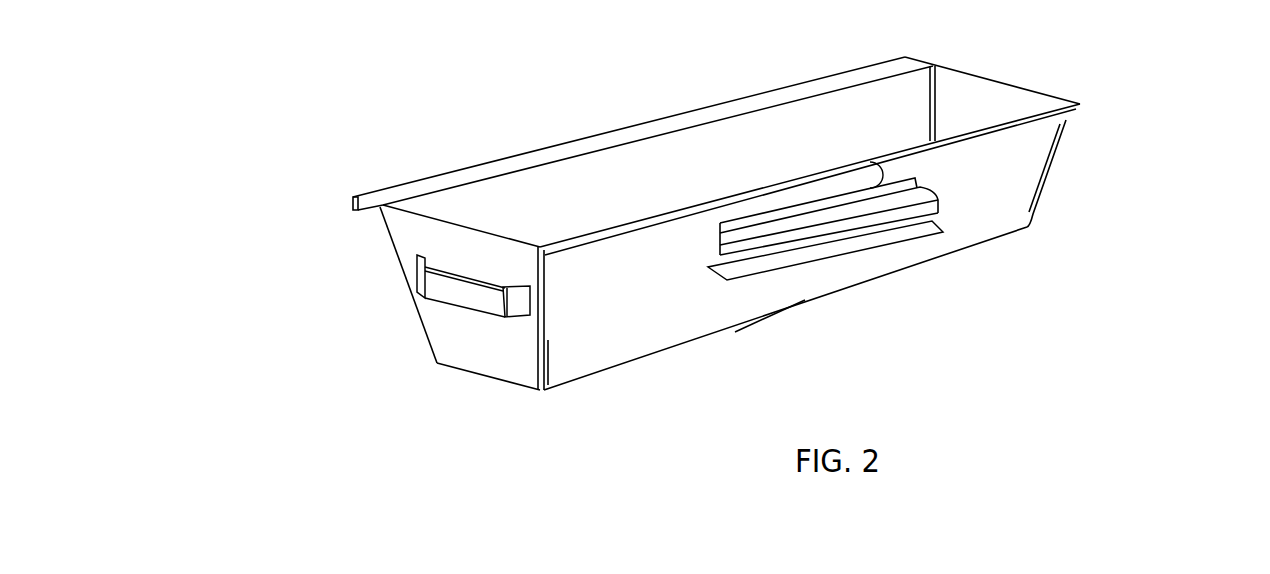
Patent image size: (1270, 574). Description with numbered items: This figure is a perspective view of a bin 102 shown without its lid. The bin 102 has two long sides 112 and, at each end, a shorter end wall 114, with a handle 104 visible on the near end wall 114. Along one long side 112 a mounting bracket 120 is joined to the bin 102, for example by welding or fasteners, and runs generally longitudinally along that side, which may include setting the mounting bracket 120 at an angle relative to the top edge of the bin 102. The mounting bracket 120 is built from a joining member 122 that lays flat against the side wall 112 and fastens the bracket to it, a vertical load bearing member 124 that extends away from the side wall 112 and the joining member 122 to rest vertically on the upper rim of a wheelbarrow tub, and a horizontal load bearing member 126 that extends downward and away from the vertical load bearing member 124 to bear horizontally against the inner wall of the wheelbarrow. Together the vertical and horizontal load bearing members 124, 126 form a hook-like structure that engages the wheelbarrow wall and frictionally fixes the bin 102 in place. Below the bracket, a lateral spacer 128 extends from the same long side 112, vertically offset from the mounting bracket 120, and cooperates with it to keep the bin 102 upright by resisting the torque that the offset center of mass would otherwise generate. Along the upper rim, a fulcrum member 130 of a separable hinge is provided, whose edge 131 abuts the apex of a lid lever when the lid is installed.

The bin 102 is at (342, 135).
The handle 104 is at (437, 284).
The long side 112 is at (849, 139).
The end wall 114 is at (489, 345).
The mounting bracket 120 is at (943, 213).
The joining member 122 is at (722, 227).
The vertical load bearing member 124 is at (720, 239).
The horizontal load bearing member 126 is at (753, 240).
The lateral spacer 128 is at (863, 245).
The fulcrum member 130 is at (1075, 105).
The edge of the fulcrum 131 is at (1065, 118).